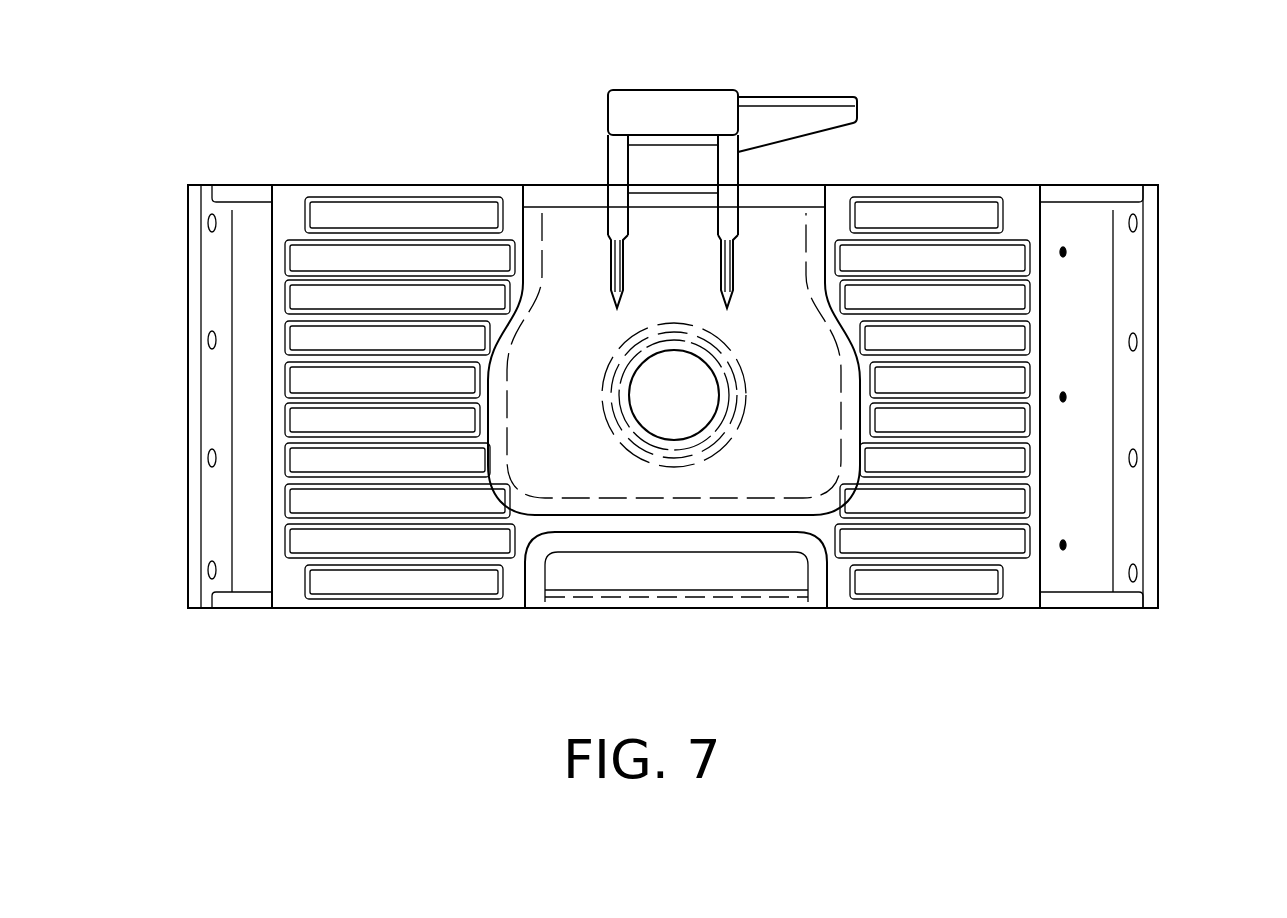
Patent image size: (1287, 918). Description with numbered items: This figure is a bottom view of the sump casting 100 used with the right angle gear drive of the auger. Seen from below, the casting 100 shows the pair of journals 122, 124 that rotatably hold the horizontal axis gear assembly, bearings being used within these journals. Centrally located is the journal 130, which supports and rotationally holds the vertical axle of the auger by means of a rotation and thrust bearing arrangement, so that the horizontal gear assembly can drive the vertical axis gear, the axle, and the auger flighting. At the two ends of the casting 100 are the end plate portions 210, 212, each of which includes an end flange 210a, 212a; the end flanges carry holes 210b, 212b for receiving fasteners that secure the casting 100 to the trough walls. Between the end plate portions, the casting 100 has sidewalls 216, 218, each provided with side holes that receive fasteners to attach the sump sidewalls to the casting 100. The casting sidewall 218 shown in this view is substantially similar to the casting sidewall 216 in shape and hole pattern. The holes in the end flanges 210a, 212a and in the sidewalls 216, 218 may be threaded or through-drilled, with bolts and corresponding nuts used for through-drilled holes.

The casting 100 is at (952, 136).
The journal 122 is at (715, 76).
The journal 124 is at (630, 540).
The journal 130 is at (752, 418).
The end plate portion 210 is at (1150, 396).
The end flange 210a is at (1133, 292).
The holes 210b is at (1137, 223).
The end plate portion 212 is at (179, 396).
The end flange 212a is at (213, 280).
The holes 212b is at (210, 222).
The sidewall 216 is at (447, 185).
The sidewall 218 is at (400, 612).